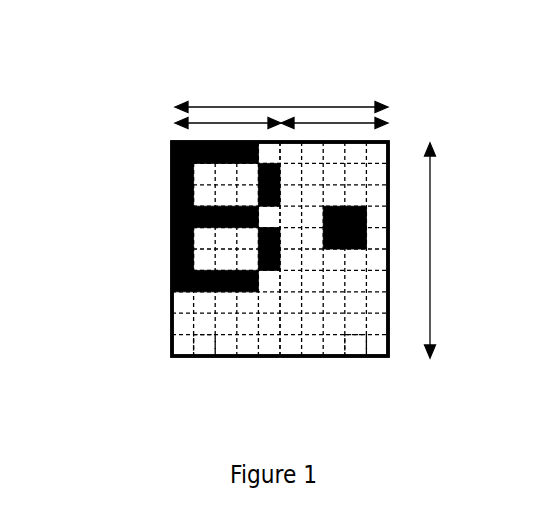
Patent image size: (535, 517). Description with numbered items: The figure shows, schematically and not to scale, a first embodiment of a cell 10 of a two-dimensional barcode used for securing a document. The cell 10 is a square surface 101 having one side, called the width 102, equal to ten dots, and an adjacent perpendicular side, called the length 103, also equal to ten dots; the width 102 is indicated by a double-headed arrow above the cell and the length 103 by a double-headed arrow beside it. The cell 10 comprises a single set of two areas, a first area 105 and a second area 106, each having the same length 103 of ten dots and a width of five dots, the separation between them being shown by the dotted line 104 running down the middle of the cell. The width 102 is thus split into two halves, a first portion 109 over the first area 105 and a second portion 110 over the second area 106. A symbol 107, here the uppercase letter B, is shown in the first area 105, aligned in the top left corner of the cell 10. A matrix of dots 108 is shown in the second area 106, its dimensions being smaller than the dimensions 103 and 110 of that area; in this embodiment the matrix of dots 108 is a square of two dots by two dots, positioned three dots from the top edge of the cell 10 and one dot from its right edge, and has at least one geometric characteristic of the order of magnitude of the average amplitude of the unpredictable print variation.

The cell 10 is at (107, 170).
The square surface 101 is at (170, 342).
The width 102 is at (196, 106).
The length 103 is at (431, 202).
The dotted line 104 is at (280, 355).
The first area 105 is at (205, 345).
The second area 106 is at (355, 347).
The symbol 107 is at (171, 197).
The matrix of dots 108 is at (367, 235).
The first width portion 109 is at (253, 122).
The dimension of the second area 110 is at (348, 122).